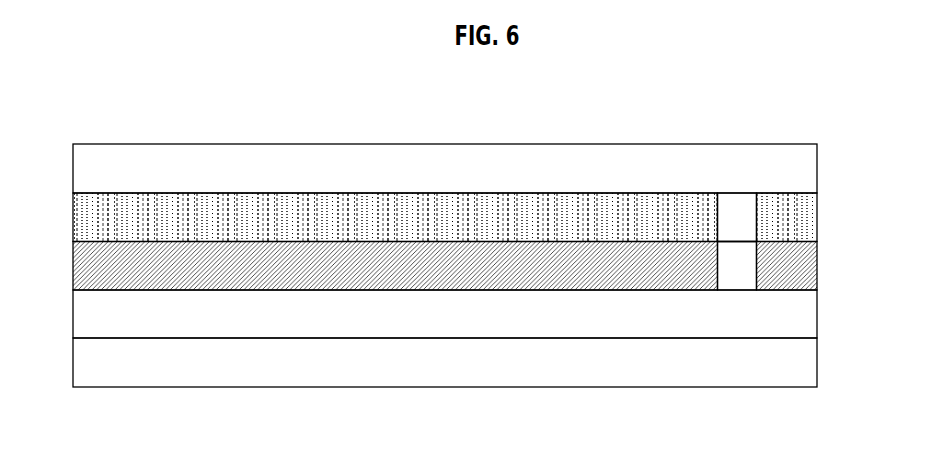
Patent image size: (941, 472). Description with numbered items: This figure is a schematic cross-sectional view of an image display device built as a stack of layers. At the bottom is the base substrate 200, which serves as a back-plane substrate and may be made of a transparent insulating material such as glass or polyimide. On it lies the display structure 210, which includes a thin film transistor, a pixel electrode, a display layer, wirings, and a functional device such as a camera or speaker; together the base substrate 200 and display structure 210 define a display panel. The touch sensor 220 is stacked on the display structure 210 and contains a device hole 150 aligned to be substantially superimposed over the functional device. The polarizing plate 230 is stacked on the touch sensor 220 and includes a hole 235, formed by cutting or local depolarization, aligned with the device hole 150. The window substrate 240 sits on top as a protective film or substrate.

The device hole 150 is at (720, 257).
The base substrate 200 is at (810, 359).
The display structure 210 is at (810, 311).
The touch sensor 220 is at (810, 263).
The polarizing plate 230 is at (810, 216).
The hole 235 is at (755, 213).
The window substrate 240 is at (810, 168).